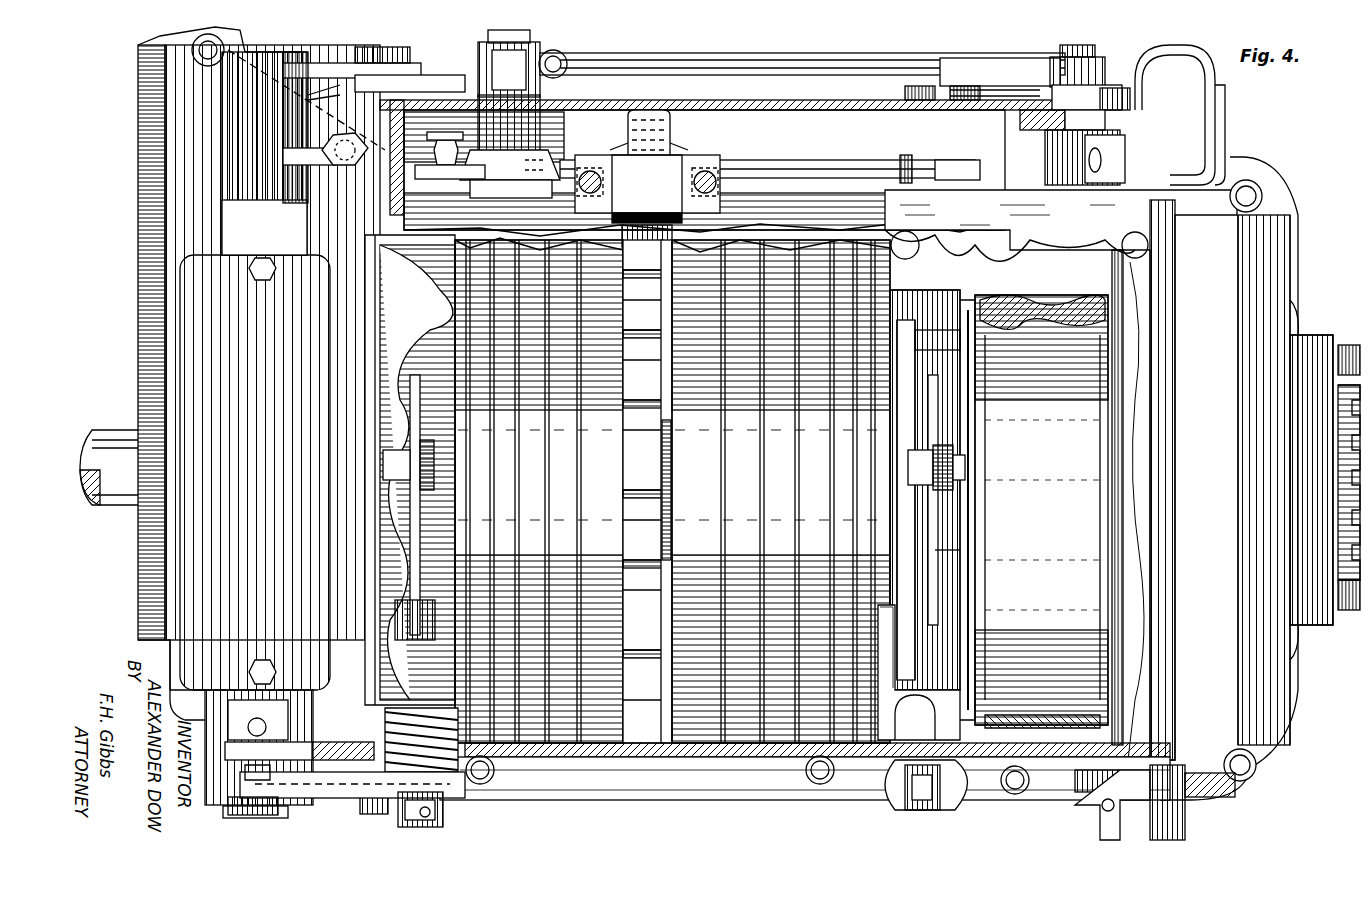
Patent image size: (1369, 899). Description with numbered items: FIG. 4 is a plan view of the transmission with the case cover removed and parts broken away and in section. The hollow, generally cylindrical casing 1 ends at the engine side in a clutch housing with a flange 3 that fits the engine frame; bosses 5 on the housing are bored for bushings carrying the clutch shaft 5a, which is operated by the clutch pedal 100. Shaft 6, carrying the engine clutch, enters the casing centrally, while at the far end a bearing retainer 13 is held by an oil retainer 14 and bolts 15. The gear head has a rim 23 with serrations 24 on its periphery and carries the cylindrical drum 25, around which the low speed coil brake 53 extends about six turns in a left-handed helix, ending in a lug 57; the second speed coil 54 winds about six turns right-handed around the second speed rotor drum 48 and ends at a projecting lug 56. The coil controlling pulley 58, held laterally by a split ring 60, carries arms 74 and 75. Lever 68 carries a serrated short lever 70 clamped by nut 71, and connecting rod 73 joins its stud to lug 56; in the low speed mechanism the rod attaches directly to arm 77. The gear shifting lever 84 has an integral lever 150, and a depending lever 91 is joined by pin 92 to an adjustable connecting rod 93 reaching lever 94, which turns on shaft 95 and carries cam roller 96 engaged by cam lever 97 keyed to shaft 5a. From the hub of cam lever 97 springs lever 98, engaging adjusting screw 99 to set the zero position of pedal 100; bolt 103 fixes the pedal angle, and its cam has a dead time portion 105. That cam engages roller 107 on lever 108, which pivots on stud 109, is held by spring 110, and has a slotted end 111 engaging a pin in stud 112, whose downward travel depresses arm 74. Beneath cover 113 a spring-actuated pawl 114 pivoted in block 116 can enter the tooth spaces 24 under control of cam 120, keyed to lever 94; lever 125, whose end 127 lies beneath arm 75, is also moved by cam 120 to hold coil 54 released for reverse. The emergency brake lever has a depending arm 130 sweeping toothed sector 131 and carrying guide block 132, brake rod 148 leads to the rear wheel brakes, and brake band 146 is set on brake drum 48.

The frame or casing 1 is at (1091, 478).
The flange 3 is at (150, 276).
The bosses 5 is at (255, 428).
The clutch shaft 5a is at (262, 818).
The shaft 6 is at (124, 497).
The bearing retainer 13 is at (1313, 345).
The oil retainer 14 is at (1340, 447).
The bolts 15 is at (1347, 348).
The rim 23 is at (643, 491).
The serrations 24 is at (651, 491).
The cylindrical drum 25 is at (440, 322).
The second speed rotor drum 48 is at (1041, 510).
The low speed coil brake 53 is at (539, 490).
The second speed coil brake 54 is at (781, 491).
The projecting lug 56 is at (908, 622).
The lug 57 is at (423, 618).
The coil controlling pulley 58 is at (900, 325).
The split ring 60 is at (933, 338).
The lever 68 is at (965, 506).
The short lever 70 is at (975, 428).
The nut 71 is at (970, 452).
The connecting rod 73 is at (982, 547).
The arm 74 is at (925, 700).
The arm 75 is at (918, 160).
The arm 77 is at (420, 458).
The gear shifting lever 84 is at (1215, 797).
The depending lever 91 is at (1197, 135).
The pin 92 is at (1075, 43).
The adjustable connecting rod 93 is at (608, 60).
The lever 94 is at (396, 60).
The shaft 95 is at (490, 35).
The cam roller 96 is at (440, 74).
The cam lever 97 is at (318, 70).
The lever 98 is at (312, 150).
The adjusting screw 99 is at (338, 135).
The clutch pedal 100 is at (334, 746).
The bolt 103 is at (378, 832).
The dead time portion 105 is at (335, 808).
The roller 107 is at (258, 828).
The lever 108 is at (692, 790).
The stud 109 is at (426, 828).
The spring 110 is at (470, 795).
The end of lever 111 is at (905, 805).
The stud 112 is at (923, 815).
The cover 113 is at (768, 104).
The pawl 114 is at (672, 147).
The block 116 is at (647, 201).
The cam 120 is at (446, 143).
The lever 125 is at (783, 166).
The end of lever 127 is at (952, 182).
The depending arm 130 is at (1095, 122).
The toothed sector 131 is at (1165, 80).
The guide block 132 is at (1105, 90).
The brake band 146 is at (990, 722).
The brake rod 148 is at (1035, 92).
The lever 150 is at (1103, 787).